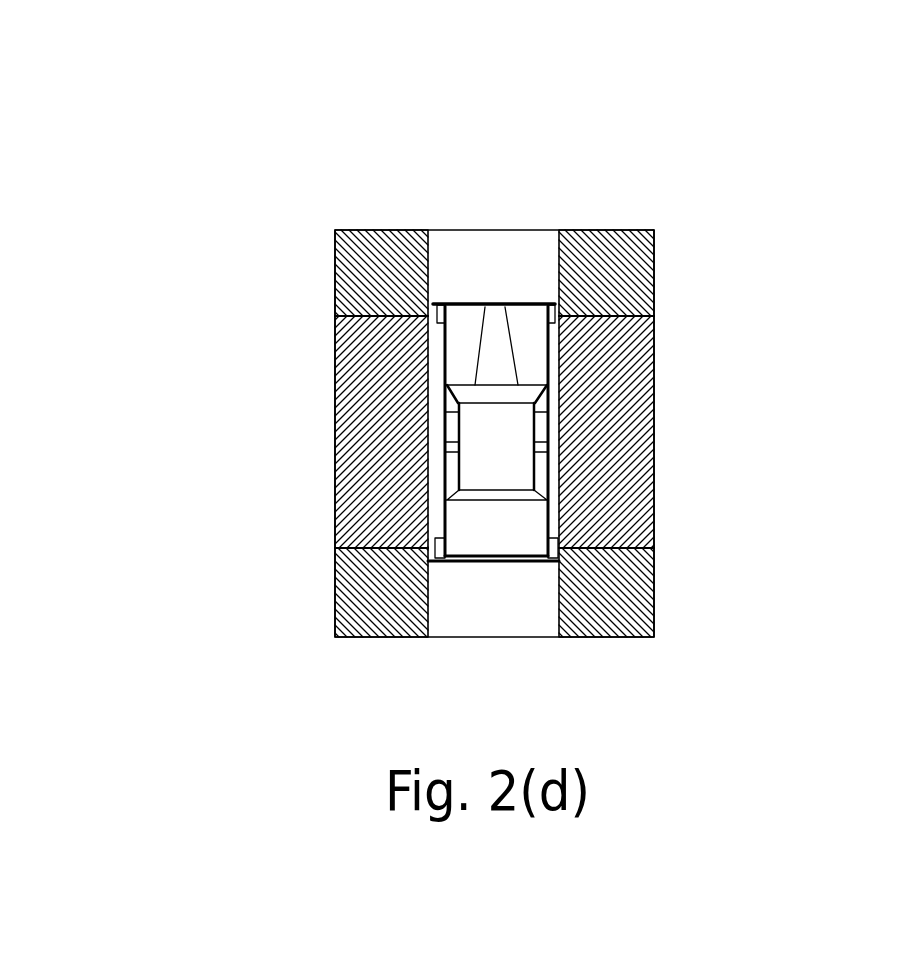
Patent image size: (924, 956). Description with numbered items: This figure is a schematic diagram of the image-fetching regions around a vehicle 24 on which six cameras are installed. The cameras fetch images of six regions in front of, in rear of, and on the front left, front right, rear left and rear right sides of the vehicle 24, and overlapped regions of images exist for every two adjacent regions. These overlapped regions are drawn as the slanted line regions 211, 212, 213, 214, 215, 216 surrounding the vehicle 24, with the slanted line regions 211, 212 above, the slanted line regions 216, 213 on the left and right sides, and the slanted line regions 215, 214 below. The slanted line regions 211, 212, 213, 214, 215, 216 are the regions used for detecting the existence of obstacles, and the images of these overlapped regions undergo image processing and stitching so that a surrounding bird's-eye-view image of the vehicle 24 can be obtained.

The vehicle 24 is at (518, 303).
The slanted line region 211 is at (335, 244).
The slanted line region 212 is at (613, 293).
The slanted line region 213 is at (633, 418).
The slanted line region 214 is at (618, 603).
The slanted line region 215 is at (377, 605).
The slanted line region 216 is at (357, 480).